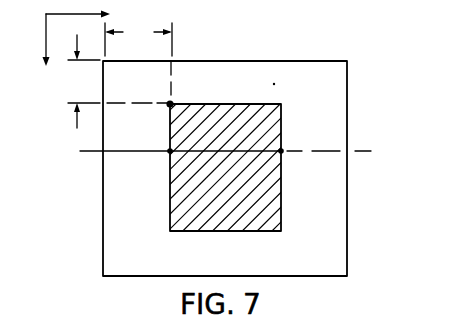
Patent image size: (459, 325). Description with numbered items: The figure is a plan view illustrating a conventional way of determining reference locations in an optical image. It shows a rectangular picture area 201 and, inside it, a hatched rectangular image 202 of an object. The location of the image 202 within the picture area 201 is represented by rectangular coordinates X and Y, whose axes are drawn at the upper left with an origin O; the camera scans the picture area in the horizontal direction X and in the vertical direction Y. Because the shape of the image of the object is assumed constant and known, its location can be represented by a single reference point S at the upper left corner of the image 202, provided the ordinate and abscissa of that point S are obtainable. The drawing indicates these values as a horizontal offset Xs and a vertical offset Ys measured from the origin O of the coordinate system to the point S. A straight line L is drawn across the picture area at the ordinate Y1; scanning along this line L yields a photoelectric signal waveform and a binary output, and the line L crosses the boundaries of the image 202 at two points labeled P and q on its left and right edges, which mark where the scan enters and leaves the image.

The picture area 201 is at (299, 60).
The image of an object 202 is at (223, 104).
The reference point S is at (173, 101).
The left intersection point of scan line with window P is at (163, 143).
The right intersection point of scan line with window q is at (287, 142).
The straight line L is at (357, 153).
The ordinate Y1 is at (167, 153).
The window start x-offset Xs is at (138, 39).
The window start y-offset Ys is at (119, 81).
The X coordinate X is at (84, 14).
The Y coordinate Y is at (44, 51).
The origin O is at (93, 49).